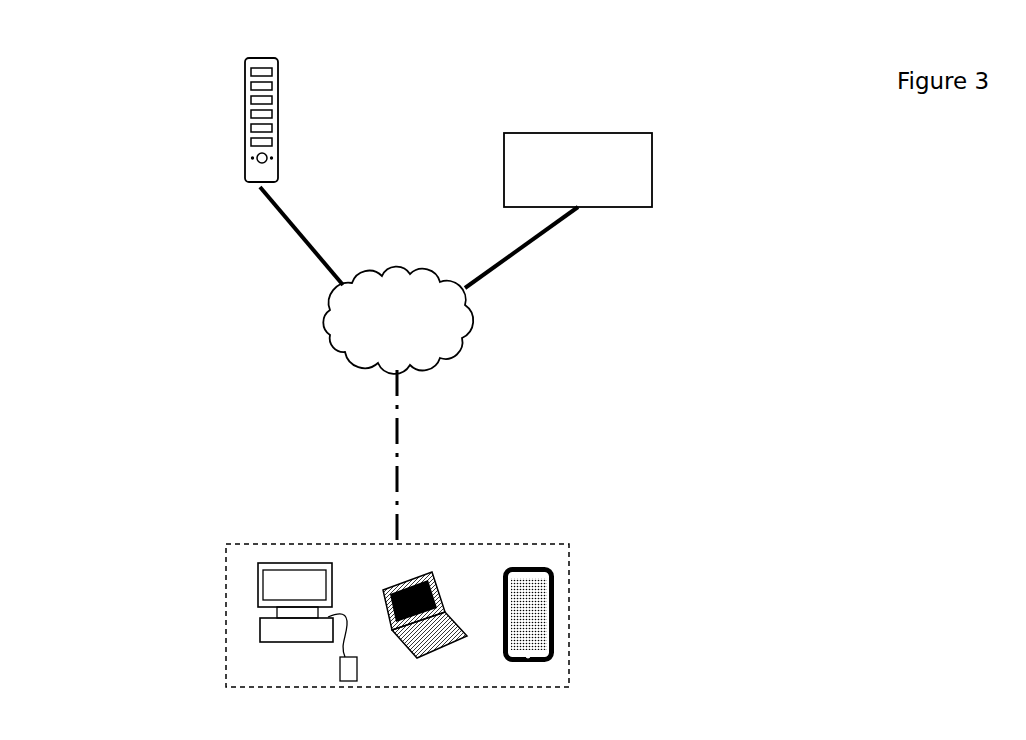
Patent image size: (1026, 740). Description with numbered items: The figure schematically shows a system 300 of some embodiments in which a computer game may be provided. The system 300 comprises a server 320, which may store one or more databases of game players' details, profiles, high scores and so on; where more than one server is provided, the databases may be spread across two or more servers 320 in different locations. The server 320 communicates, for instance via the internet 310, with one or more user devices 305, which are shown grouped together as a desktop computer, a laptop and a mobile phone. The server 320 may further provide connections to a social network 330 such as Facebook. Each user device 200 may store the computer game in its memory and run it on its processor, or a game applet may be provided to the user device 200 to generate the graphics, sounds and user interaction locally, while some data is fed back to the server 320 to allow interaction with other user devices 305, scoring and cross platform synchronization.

The system 300 is at (668, 93).
The server 320 is at (240, 124).
The social network 330 is at (652, 170).
The internet 310 is at (327, 320).
The user devices 305 is at (577, 611).
The user device 200 is at (304, 563).